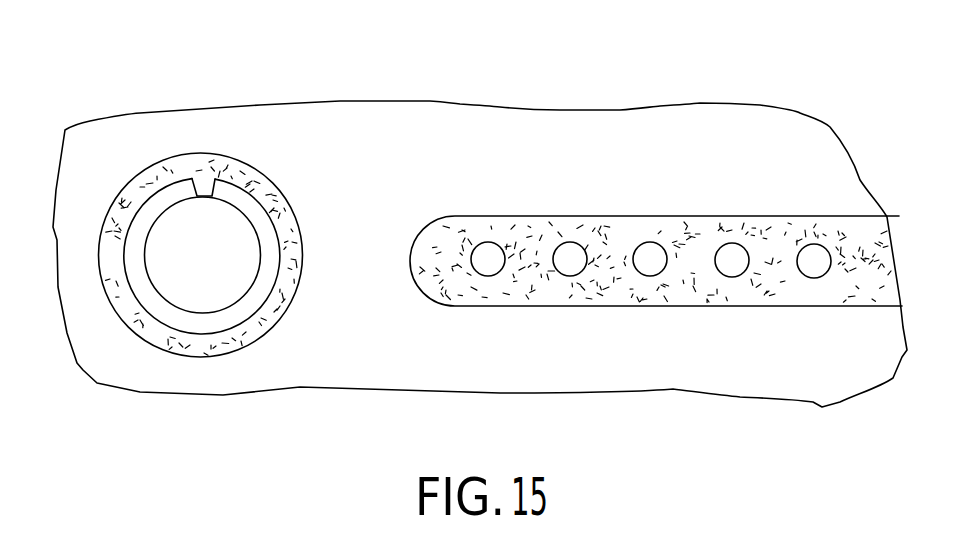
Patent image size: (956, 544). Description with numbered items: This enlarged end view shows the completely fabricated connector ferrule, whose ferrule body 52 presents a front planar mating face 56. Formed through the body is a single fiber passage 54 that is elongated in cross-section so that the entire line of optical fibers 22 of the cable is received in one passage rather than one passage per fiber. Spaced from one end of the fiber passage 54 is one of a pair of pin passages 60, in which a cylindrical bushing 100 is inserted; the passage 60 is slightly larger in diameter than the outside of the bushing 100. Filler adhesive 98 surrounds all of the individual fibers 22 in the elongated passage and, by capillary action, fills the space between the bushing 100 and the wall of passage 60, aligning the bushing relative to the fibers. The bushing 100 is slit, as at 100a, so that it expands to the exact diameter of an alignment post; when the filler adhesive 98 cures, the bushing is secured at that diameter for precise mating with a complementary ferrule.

The ferrule body 52 is at (430, 101).
The front planar mating face 56 is at (382, 161).
The pin passage 60 is at (123, 317).
The bushing 100 is at (224, 316).
The slit 100a is at (212, 180).
The fiber passage 54 is at (623, 222).
The optical fibers 22 is at (813, 265).
The filler adhesive 98 is at (168, 170).